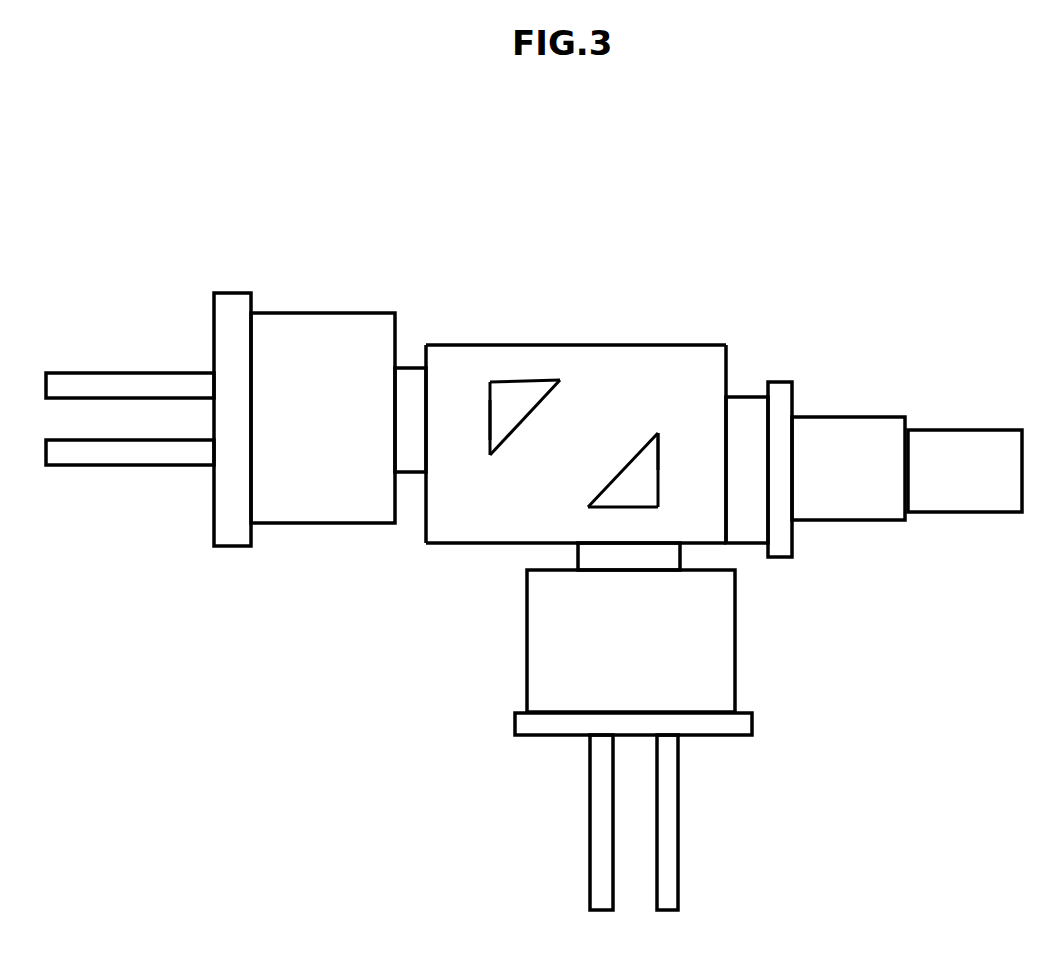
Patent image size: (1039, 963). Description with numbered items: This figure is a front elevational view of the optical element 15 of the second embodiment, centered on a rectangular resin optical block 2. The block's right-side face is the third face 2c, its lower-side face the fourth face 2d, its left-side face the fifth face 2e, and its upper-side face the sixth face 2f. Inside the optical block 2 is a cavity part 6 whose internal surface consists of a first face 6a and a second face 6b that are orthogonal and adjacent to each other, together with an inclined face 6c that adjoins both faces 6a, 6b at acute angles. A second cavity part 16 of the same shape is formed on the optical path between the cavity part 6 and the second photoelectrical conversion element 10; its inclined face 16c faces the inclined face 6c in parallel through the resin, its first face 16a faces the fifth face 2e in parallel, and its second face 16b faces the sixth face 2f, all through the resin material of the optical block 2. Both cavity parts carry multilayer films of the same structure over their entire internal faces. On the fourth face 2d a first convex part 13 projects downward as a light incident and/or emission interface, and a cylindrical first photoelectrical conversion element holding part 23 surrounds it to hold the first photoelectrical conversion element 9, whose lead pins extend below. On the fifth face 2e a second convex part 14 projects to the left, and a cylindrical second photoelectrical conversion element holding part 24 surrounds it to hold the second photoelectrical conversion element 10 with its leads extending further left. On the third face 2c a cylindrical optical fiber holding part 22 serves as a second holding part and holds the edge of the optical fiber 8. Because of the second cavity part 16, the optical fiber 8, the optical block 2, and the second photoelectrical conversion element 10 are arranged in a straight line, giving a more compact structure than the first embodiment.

The optical element 15 is at (135, 217).
The optical block 2 is at (466, 345).
The third face 2c is at (727, 382).
The fourth face 2d is at (513, 545).
The fifth face 2e is at (425, 528).
The sixth face 2f is at (550, 345).
The cavity part 6 is at (643, 473).
The first face 6a is at (659, 488).
The second face 6b is at (588, 507).
The inclined face 6c is at (618, 477).
The optical fiber 8 is at (955, 428).
The first photoelectrical conversion element 9 is at (590, 795).
The second photoelectrical conversion element 10 is at (105, 472).
The first convex part 13 is at (680, 553).
The second convex part 14 is at (408, 367).
The second cavity part 16 is at (512, 398).
The first face 16a is at (493, 412).
The second face 16b is at (559, 381).
The inclined face 16c is at (512, 432).
The optical fiber holding part 22 is at (833, 417).
The first photoelectrical conversion element holding part 23 is at (737, 630).
The second photoelectrical conversion element holding part 24 is at (317, 313).